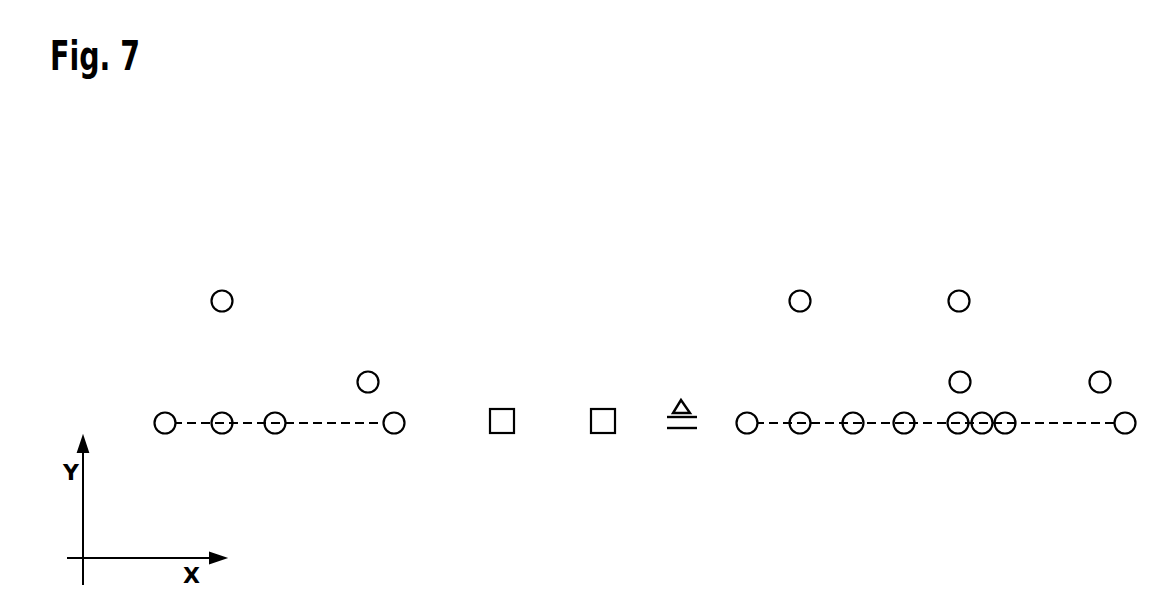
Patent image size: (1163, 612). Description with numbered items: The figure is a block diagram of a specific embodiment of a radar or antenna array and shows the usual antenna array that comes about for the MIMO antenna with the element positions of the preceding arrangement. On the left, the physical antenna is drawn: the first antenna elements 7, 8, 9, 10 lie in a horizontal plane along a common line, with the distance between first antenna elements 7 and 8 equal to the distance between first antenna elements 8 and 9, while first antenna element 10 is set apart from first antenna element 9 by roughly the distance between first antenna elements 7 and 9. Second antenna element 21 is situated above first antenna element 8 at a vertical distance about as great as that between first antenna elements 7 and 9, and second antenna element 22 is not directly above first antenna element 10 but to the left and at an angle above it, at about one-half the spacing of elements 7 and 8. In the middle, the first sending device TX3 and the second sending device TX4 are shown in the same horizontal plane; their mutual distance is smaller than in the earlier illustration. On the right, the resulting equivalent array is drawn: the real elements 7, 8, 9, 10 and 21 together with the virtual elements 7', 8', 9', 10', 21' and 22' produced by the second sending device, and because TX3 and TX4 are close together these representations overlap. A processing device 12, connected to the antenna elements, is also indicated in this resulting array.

The first antenna element 7 is at (456, 461).
The first antenna element 8 is at (511, 461).
The first antenna element 9 is at (564, 461).
The first antenna element 10 is at (688, 461).
The first antenna element 7' is at (908, 461).
The first antenna element 8' is at (953, 461).
The first antenna element 9' is at (1016, 461).
The first antenna element 10' is at (1128, 461).
The processing device 12 is at (950, 382).
The second antenna element 21 is at (510, 254).
The second antenna element 21' is at (964, 253).
The second antenna element 22 is at (367, 336).
The second antenna element 22' is at (1097, 337).
The first sending device TX3 is at (505, 434).
The second sending device TX4 is at (606, 434).